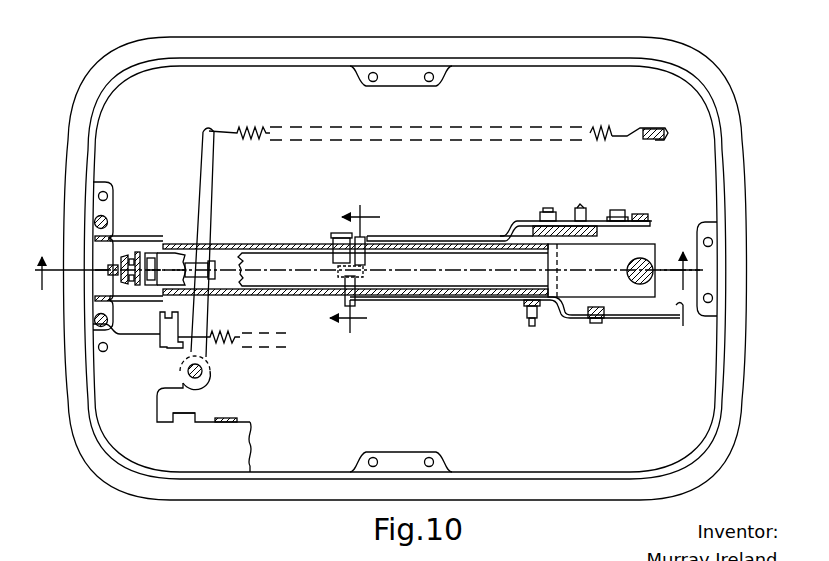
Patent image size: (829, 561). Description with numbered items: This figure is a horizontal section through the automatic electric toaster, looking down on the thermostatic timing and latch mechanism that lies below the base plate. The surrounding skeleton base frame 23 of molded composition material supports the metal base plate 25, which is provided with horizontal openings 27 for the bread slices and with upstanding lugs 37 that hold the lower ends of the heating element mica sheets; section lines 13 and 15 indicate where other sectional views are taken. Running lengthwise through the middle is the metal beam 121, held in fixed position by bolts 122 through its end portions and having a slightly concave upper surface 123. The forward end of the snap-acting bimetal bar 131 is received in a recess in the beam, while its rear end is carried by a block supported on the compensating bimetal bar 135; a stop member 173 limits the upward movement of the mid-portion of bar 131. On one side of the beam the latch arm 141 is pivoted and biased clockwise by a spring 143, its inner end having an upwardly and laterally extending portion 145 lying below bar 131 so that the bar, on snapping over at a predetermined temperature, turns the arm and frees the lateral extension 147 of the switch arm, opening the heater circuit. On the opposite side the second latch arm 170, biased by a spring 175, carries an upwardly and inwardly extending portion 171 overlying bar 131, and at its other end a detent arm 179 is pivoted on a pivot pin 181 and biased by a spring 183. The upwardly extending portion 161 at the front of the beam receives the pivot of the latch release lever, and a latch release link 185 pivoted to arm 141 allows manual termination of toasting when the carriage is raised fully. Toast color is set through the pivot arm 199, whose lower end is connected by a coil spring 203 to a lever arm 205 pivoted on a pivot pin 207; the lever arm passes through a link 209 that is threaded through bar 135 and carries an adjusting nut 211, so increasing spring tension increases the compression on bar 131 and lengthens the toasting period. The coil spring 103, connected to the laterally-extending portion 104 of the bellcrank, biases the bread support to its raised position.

The skeleton base frame 23 is at (712, 74).
The metal base plate 25 is at (252, 449).
The horizontal openings 27 is at (252, 420).
The upstanding lugs 37 is at (186, 422).
The section line 13 is at (365, 269).
The section line 15 is at (366, 259).
The coil spring 103 is at (218, 332).
The laterally-extending portion 104 is at (160, 325).
The metal beam 121 is at (247, 244).
The bolts 122 is at (97, 222).
The concave upper surface 123 is at (220, 255).
The snap-acting bimetal bar 131 is at (290, 288).
The compensating bimetal bar 135 is at (138, 287).
The latch arm 141 is at (452, 301).
The spring 143 is at (538, 319).
The upwardly and laterally extending portion 145 is at (346, 279).
The lateral extension 147 is at (598, 324).
The upwardly extending portion 161 is at (583, 237).
The second latch arm 170 is at (470, 236).
The upwardly and inwardly extending portion 171 is at (366, 259).
The stop member 173 is at (334, 260).
The spring 175 is at (583, 207).
The detent arm 179 is at (648, 218).
The pivot pin 181 is at (617, 210).
The spring 183 is at (641, 214).
The latch release link 185 is at (684, 316).
The pivot arm 199 is at (664, 130).
The coil spring 203 is at (252, 128).
The lever arm 205 is at (212, 192).
The pivot pin 207 is at (205, 377).
The link 209 is at (190, 237).
The adjusting nut 211 is at (128, 253).